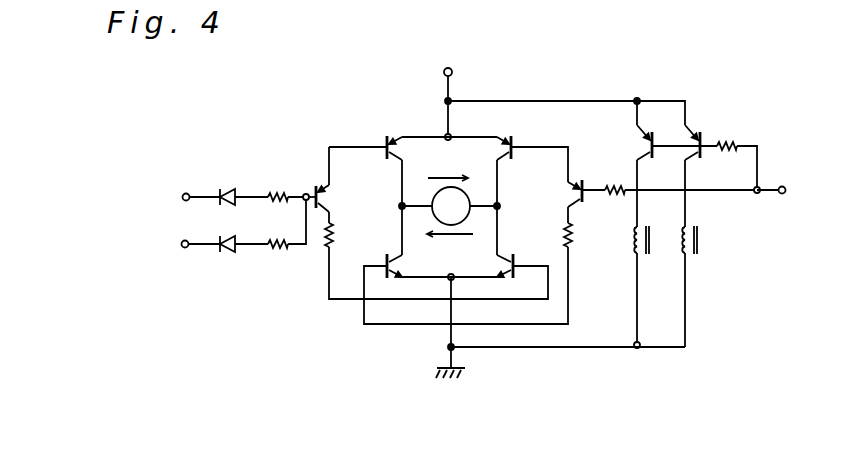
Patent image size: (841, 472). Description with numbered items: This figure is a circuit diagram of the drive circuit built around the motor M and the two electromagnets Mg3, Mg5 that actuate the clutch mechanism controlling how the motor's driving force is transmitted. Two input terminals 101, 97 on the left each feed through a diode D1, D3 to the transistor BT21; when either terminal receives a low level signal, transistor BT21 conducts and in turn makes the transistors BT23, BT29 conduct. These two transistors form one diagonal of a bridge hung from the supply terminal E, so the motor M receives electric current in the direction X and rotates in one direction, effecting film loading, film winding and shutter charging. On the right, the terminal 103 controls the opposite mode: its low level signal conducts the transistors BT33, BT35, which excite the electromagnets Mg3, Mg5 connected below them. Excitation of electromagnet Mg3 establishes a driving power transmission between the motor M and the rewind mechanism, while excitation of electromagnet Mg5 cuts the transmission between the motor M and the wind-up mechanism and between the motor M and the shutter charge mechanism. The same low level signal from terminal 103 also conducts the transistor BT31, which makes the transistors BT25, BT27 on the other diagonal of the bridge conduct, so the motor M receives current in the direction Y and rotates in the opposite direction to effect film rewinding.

The terminal 101 is at (154, 197).
The terminal 97 is at (159, 242).
The terminal 103 is at (810, 191).
The diode D1 is at (227, 187).
The diode D3 is at (230, 250).
The transistor BT21 is at (314, 188).
The transistor BT23 is at (398, 137).
The transistor BT25 is at (398, 253).
The transistor BT27 is at (502, 140).
The transistor BT29 is at (499, 253).
The transistor BT31 is at (575, 204).
The transistor BT33 is at (645, 138).
The transistor BT35 is at (687, 135).
The power supply terminal E is at (448, 56).
The motor M is at (455, 209).
The current direction X is at (448, 165).
The current direction Y is at (450, 246).
The electromagnet Mg3 is at (645, 257).
The electromagnet Mg5 is at (693, 255).